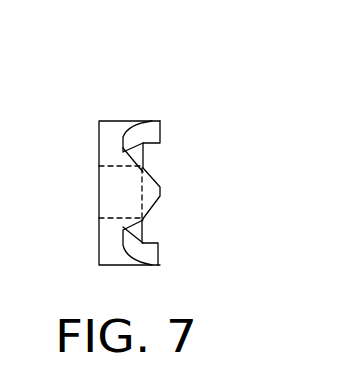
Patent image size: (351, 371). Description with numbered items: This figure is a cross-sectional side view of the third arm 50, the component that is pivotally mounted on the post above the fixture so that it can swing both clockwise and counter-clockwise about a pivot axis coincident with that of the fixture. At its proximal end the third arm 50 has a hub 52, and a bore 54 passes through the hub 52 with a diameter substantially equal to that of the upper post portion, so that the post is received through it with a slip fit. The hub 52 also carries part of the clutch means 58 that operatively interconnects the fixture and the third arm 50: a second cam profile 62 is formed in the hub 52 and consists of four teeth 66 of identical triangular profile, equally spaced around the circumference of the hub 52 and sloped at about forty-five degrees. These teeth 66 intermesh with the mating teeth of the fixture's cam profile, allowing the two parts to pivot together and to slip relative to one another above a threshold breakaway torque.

The third arm 50 is at (156, 153).
The hub 52 is at (112, 121).
The bore 54 is at (92, 193).
The clutch means 58 is at (147, 154).
The second cam profile 62 is at (187, 175).
The teeth 66 is at (210, 168).